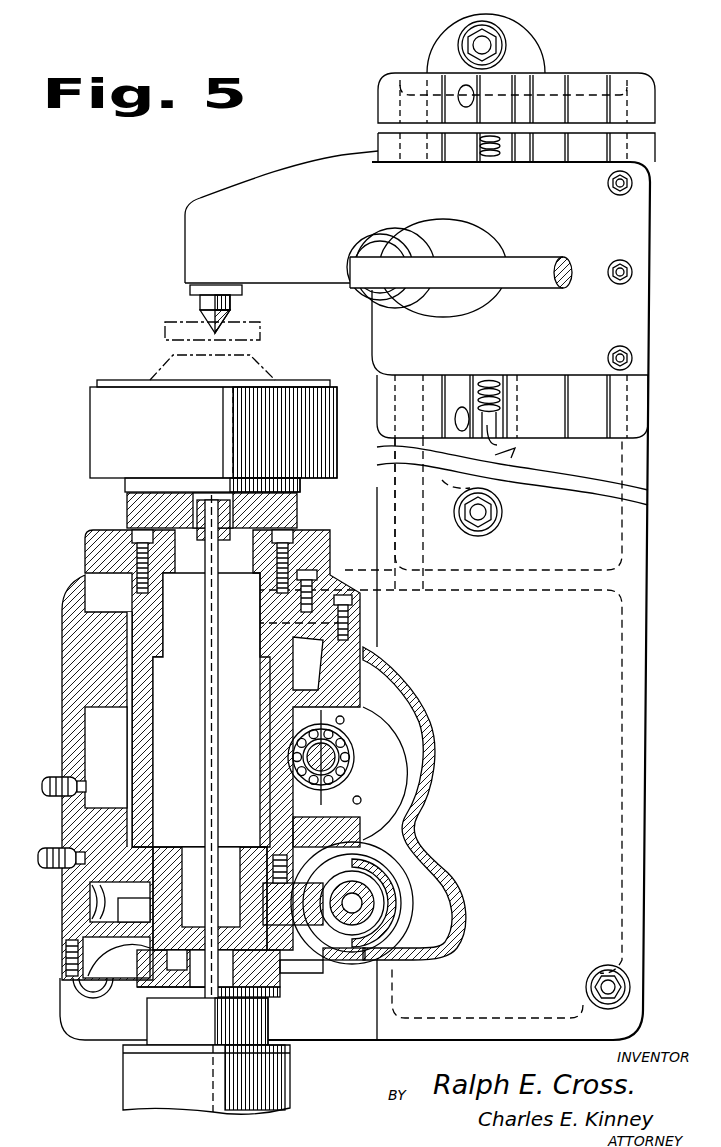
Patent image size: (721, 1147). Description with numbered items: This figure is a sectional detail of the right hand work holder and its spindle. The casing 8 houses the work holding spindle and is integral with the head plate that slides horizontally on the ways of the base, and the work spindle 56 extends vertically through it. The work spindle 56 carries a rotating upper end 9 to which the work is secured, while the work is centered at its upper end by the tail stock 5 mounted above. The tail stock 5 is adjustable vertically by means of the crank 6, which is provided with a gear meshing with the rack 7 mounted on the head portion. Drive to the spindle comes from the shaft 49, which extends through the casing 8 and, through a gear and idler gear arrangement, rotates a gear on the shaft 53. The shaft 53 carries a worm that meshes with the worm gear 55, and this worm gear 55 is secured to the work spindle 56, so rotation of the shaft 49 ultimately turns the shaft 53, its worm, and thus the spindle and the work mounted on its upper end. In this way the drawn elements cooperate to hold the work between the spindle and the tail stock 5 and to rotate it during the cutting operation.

The tail stock 5 is at (198, 298).
The crank 6 is at (517, 288).
The rack 7 is at (306, 238).
The casing 8 is at (247, 804).
The rotating upper end 9 is at (140, 506).
The shaft 49 is at (321, 757).
The shaft 53 is at (358, 905).
The worm gear 55 is at (305, 930).
The work spindle 56 is at (284, 825).